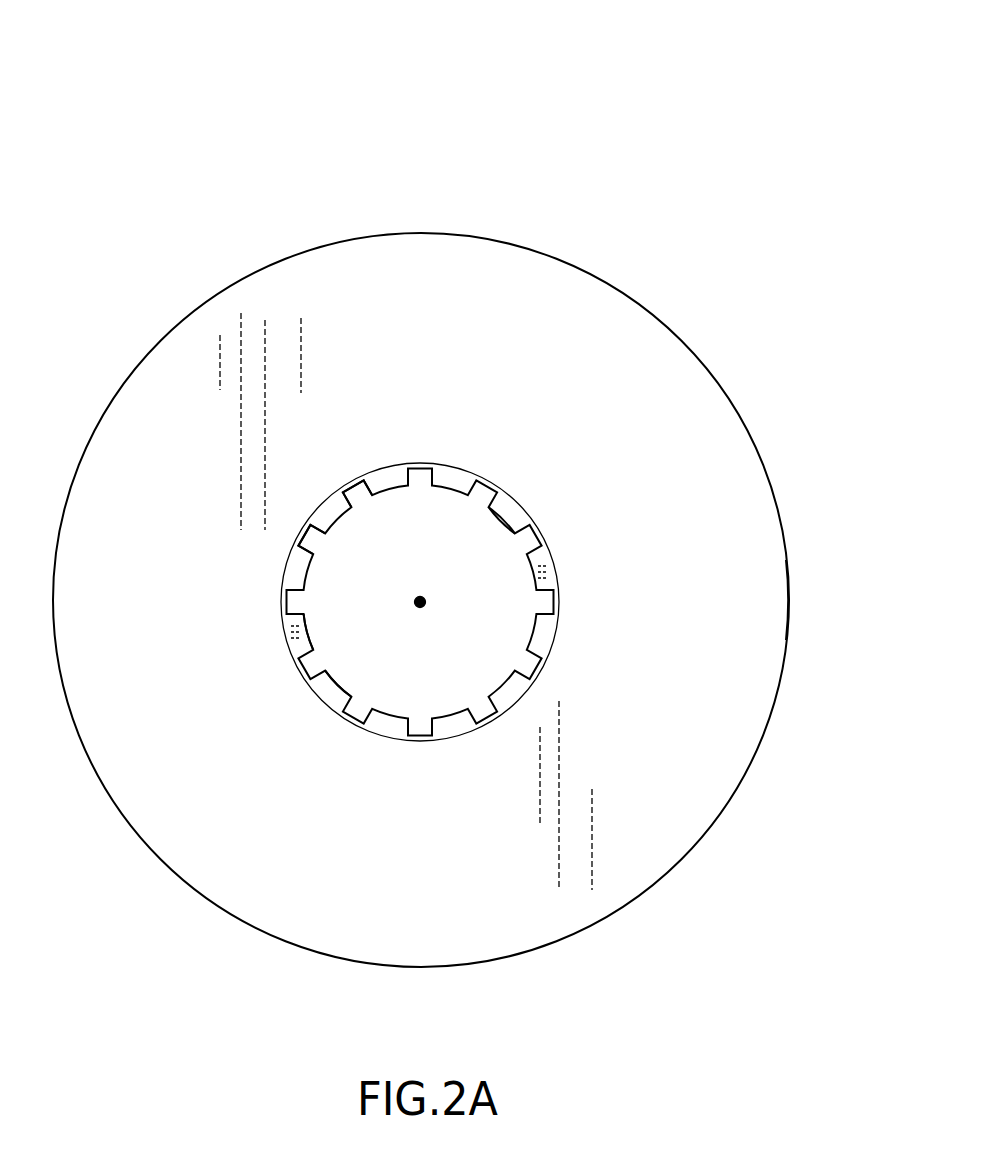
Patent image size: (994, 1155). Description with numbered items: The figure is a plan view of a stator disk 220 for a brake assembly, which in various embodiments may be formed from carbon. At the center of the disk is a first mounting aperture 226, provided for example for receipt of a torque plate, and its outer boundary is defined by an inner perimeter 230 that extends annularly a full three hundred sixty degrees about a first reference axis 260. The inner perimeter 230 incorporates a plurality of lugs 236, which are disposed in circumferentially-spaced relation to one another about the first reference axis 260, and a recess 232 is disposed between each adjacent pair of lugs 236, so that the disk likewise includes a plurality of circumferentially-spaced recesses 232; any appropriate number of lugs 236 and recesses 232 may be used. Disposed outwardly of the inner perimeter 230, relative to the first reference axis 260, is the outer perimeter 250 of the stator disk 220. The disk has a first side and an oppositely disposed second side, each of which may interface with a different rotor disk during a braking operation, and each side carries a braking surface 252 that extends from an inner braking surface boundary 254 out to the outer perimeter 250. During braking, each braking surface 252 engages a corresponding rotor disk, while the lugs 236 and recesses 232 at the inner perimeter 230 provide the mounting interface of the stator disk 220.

The stator disk 220 is at (634, 104).
The first mounting aperture 226 is at (413, 561).
The inner perimeter 230 is at (352, 677).
The recess 232 is at (366, 500).
The lug 236 is at (512, 513).
The outer perimeter 250 is at (788, 603).
The braking surface 252 is at (663, 569).
The inner braking surface boundary 254 is at (458, 468).
The first reference axis 260 is at (431, 620).